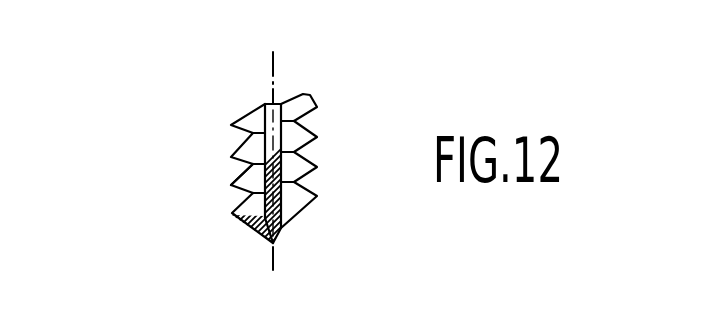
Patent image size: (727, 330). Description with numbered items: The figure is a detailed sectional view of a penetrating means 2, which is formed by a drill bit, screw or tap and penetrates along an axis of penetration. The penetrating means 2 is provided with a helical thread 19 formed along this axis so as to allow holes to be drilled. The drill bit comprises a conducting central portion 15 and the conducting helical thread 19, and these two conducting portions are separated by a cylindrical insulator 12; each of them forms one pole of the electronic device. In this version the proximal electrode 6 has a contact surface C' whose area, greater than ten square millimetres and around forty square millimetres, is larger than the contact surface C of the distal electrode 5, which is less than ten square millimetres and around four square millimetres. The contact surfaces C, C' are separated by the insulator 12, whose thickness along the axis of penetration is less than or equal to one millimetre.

The penetrating means 2 is at (119, 140).
The conducting central portion 15 is at (244, 122).
The helical thread 19 is at (315, 107).
The proximal electrode 6 is at (311, 164).
The cylindrical insulator 12 is at (282, 221).
The distal electrode 5 is at (294, 240).
The contact surface of the distal electrode C is at (235, 240).
The contact surface of the proximal electrode C' is at (205, 161).